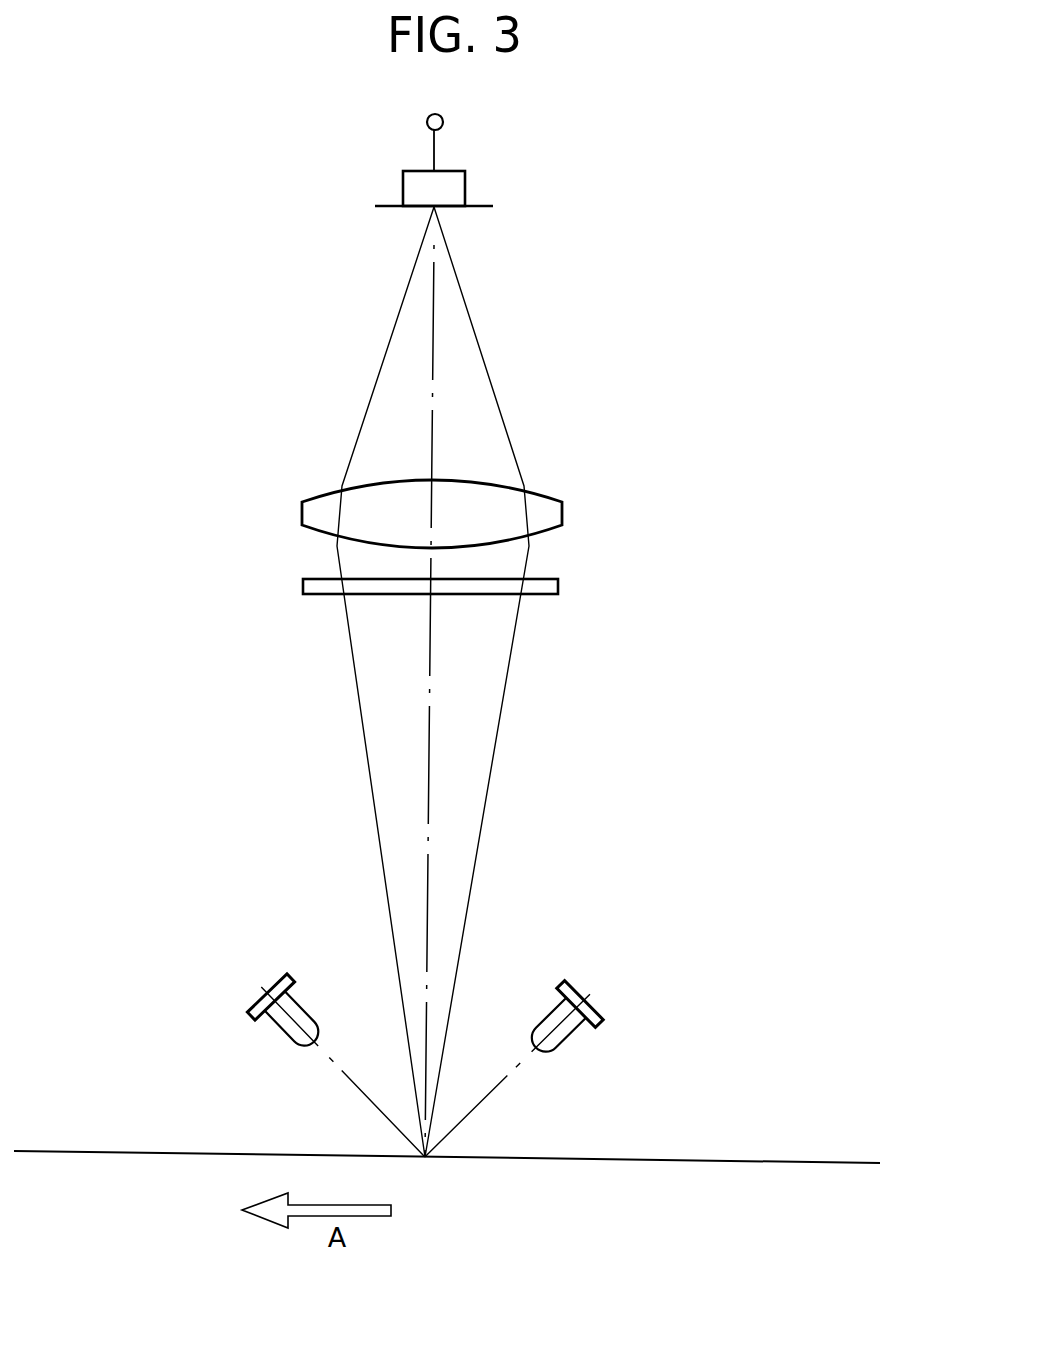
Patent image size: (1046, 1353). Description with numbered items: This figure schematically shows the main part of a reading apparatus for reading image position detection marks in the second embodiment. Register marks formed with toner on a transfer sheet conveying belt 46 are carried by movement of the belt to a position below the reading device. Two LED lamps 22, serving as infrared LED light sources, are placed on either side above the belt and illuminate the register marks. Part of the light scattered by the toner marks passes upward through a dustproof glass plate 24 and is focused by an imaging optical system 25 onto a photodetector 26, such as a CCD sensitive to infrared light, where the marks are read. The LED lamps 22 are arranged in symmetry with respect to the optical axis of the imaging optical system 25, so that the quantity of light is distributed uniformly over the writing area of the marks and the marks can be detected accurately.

The photodetector 26 is at (467, 188).
The imaging optical system 25 is at (551, 500).
The dustproof glass plate 24 is at (560, 587).
The LED lamps 22 is at (567, 992).
The transfer sheet conveying belt 46 is at (762, 1162).